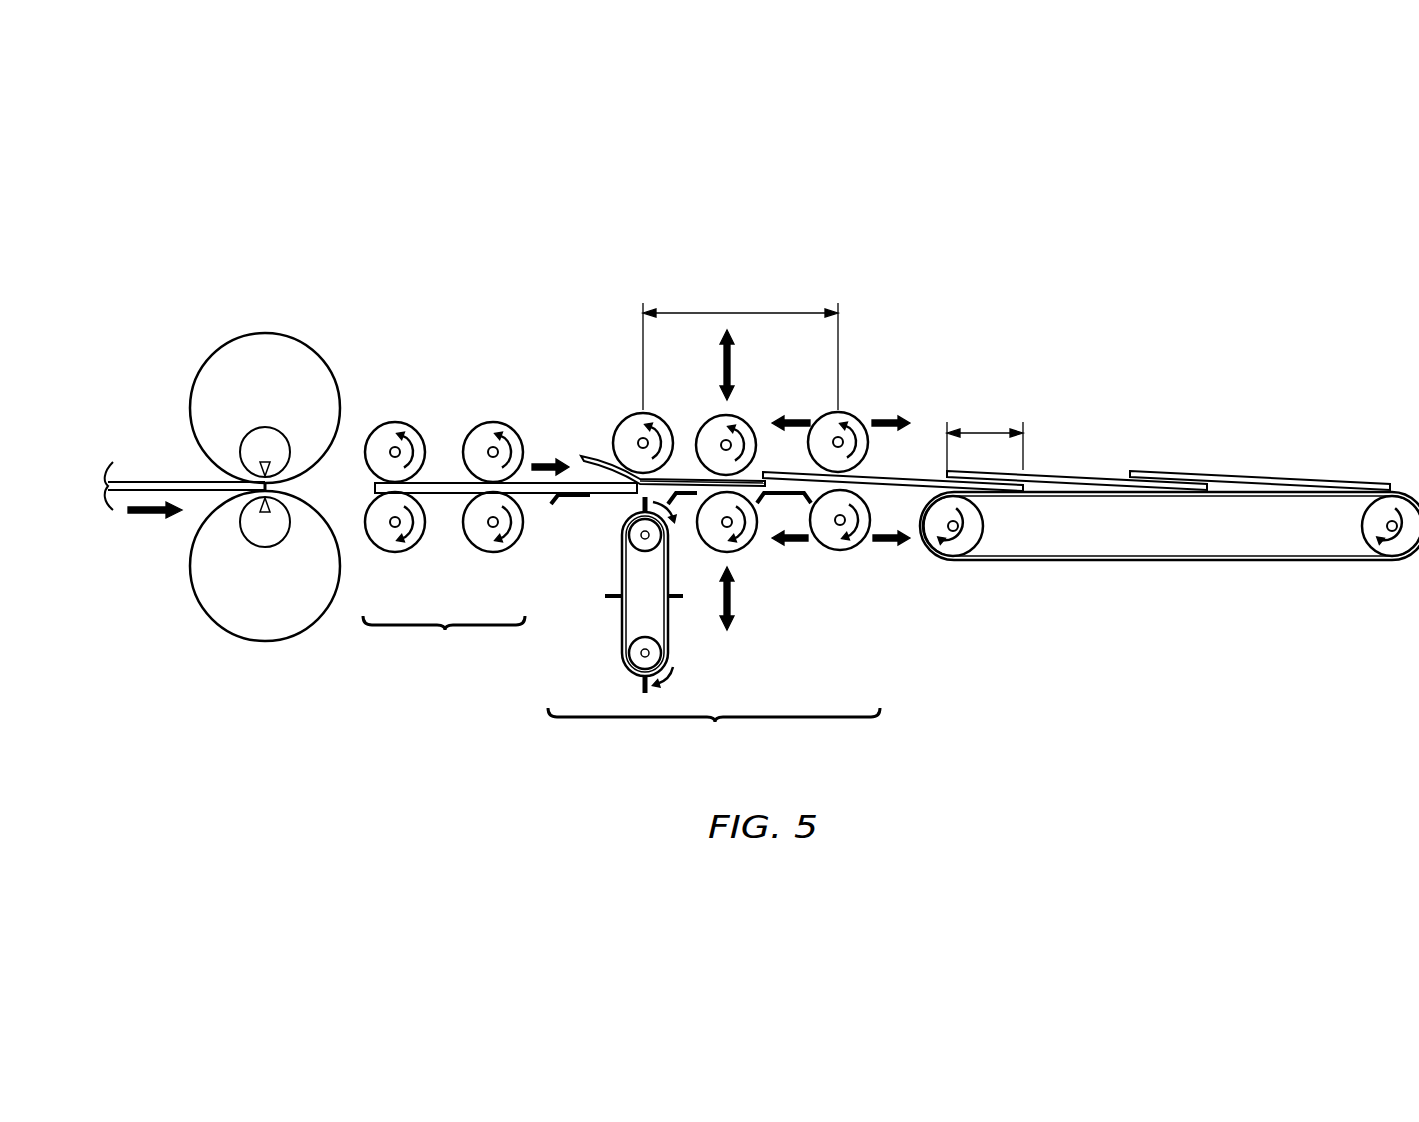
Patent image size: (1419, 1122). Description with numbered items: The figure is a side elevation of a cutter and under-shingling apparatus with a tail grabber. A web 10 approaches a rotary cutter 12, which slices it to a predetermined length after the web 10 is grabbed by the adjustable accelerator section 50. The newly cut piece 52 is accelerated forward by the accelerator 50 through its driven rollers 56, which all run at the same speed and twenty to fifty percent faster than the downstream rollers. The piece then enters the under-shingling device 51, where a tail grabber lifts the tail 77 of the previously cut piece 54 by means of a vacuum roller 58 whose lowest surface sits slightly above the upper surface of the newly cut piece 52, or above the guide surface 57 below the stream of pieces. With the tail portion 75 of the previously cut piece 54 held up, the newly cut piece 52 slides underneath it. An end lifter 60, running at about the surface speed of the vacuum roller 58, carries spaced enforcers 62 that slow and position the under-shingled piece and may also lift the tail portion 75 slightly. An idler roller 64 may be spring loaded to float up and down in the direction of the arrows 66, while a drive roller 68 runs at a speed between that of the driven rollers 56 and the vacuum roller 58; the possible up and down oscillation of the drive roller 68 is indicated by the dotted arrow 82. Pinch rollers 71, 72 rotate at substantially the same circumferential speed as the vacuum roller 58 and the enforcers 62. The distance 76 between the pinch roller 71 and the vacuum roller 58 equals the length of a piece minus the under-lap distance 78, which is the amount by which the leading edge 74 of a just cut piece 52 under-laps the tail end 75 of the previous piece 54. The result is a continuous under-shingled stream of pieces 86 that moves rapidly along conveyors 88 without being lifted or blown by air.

The web 10 is at (167, 481).
The rotary cutter 12 is at (265, 333).
The accelerator section 50 is at (444, 642).
The under-shingling device 51 is at (714, 733).
The newly cut piece 52 is at (448, 482).
The previously cut piece 54 is at (690, 476).
The driven rollers 56 is at (395, 422).
The guide surface 57 is at (685, 507).
The vacuum roller 58 is at (632, 411).
The end lifter 60 is at (622, 643).
The enforcers 62 is at (637, 502).
The idler roller 64 is at (746, 424).
The arrows 66 is at (733, 363).
The drive roller 68 is at (749, 544).
The pinch roller 71 is at (857, 419).
The pinch roller 72 is at (855, 547).
The leading edge 74 is at (872, 480).
The tail portion 75 is at (598, 456).
The distance 76 is at (742, 312).
The tail 77 is at (583, 458).
The under-lap distance 78 is at (985, 432).
The dotted arrow 82 is at (733, 601).
The under-shingled stream of pieces 86 is at (1261, 450).
The conveyors 88 is at (1185, 561).